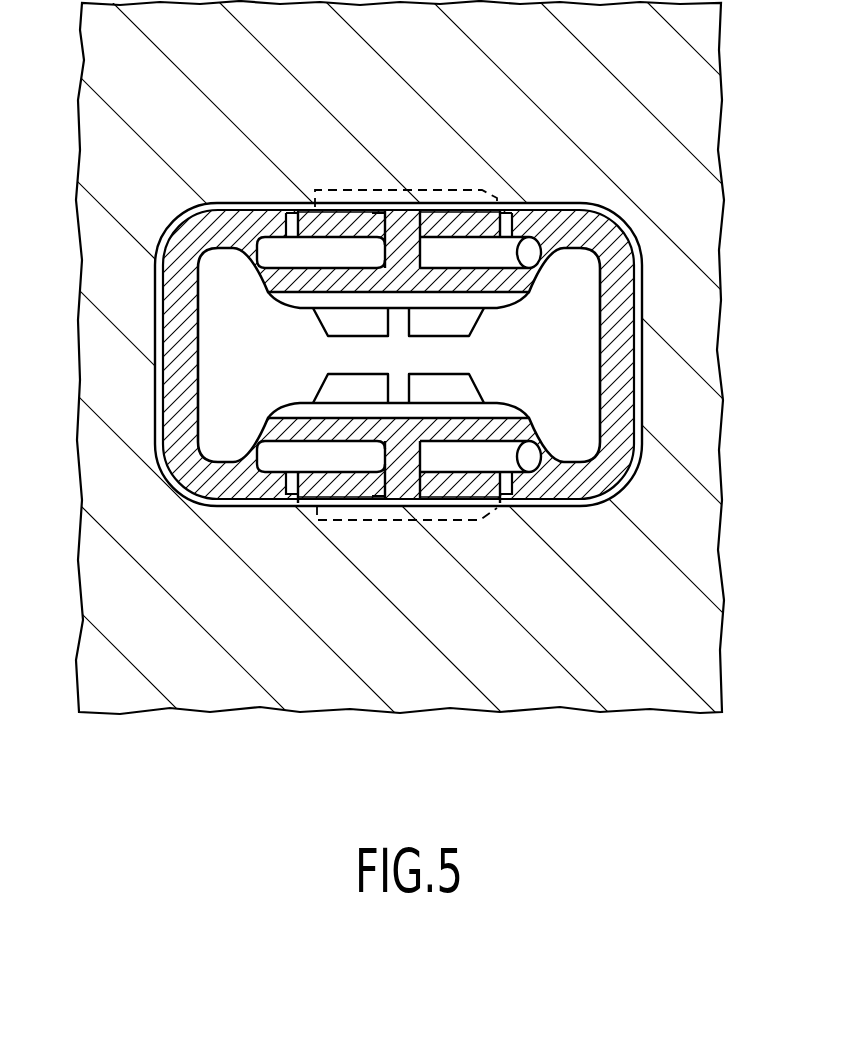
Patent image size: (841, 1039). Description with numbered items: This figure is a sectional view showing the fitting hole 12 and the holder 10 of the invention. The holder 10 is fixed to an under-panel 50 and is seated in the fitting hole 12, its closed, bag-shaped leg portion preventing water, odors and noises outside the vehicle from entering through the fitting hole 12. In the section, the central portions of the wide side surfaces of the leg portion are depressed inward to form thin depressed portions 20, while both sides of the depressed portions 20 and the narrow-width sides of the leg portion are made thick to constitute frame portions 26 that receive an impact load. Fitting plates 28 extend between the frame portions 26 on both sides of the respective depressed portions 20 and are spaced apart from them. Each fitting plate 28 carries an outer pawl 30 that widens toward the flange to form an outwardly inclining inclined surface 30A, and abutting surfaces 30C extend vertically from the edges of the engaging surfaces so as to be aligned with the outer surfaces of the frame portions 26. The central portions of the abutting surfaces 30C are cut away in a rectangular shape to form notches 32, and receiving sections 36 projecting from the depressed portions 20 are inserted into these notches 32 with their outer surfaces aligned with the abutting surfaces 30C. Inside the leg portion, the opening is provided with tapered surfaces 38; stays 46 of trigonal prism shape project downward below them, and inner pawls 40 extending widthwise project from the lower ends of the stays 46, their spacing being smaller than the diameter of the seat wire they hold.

The holder 10 is at (708, 305).
The fitting hole 12 is at (637, 349).
The depressed portions 20 is at (537, 236).
The frame portions 26 is at (166, 338).
The fitting plates 28 is at (507, 216).
The outer pawls 30 is at (480, 203).
The inclined surface 30A is at (435, 190).
The abutting surfaces 30C is at (343, 207).
The notches 32 is at (376, 213).
The receiving sections 36 is at (407, 220).
The tapered surfaces 38 is at (312, 297).
The inner pawls 40 is at (470, 317).
The stays 46 is at (391, 316).
The under-panel 50 is at (690, 630).